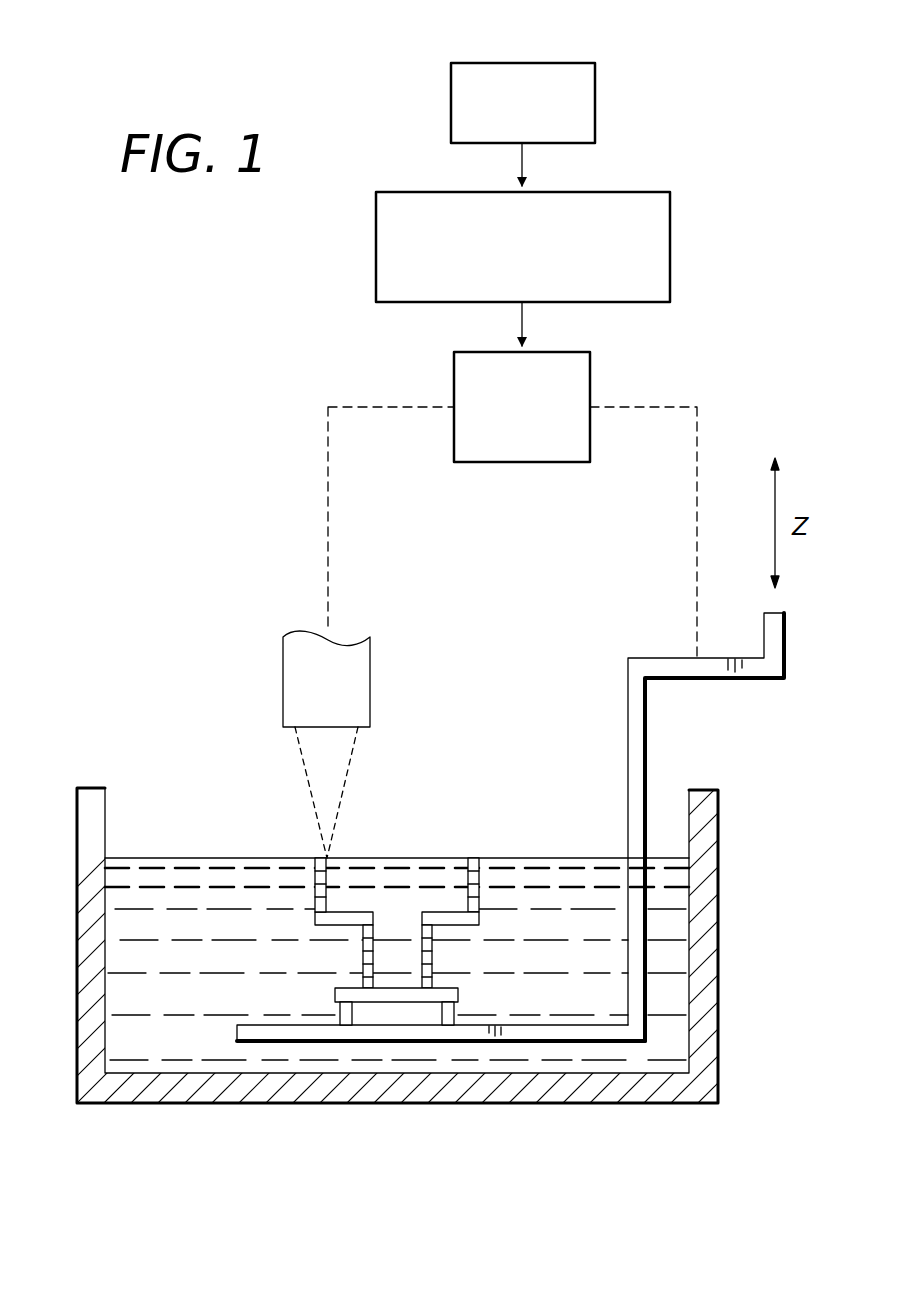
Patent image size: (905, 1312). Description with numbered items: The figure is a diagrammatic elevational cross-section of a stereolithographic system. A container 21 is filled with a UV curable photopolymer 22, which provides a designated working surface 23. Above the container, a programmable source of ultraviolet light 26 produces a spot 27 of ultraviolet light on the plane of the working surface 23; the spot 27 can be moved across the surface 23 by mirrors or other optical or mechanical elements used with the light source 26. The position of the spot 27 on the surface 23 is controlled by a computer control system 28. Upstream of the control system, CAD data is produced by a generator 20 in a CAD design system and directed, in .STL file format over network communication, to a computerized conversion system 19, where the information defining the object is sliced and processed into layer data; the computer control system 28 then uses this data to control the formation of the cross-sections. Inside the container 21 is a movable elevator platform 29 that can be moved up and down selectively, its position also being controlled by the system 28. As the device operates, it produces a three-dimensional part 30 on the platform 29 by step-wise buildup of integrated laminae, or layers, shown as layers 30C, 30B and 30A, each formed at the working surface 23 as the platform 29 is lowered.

The computerized conversion system 19 is at (633, 192).
The generator 20 is at (548, 62).
The container 21 is at (77, 888).
The UV curable photopolymer 22 is at (177, 1011).
The working surface 23 is at (208, 858).
The source of ultraviolet light 26 is at (370, 690).
The spot of ultraviolet light 27 is at (327, 858).
The computer control system 28 is at (531, 462).
The elevator platform 29 is at (563, 1033).
The three-dimensional part 30 is at (414, 916).
The layer 30A is at (482, 897).
The layer 30B is at (483, 908).
The layer 30C is at (452, 918).